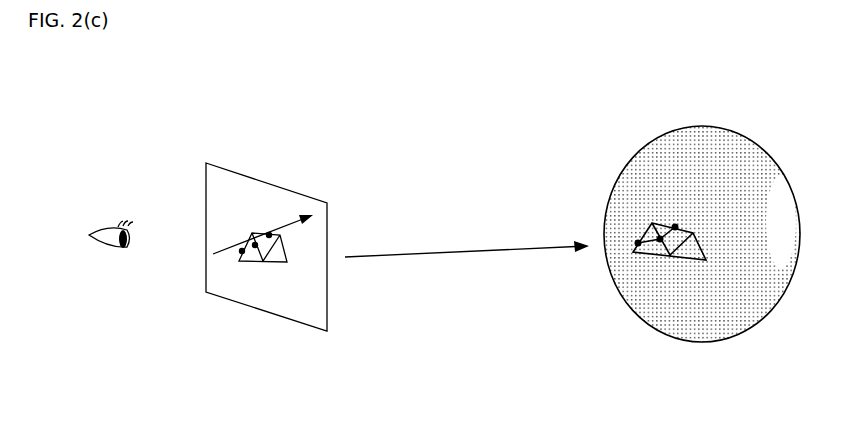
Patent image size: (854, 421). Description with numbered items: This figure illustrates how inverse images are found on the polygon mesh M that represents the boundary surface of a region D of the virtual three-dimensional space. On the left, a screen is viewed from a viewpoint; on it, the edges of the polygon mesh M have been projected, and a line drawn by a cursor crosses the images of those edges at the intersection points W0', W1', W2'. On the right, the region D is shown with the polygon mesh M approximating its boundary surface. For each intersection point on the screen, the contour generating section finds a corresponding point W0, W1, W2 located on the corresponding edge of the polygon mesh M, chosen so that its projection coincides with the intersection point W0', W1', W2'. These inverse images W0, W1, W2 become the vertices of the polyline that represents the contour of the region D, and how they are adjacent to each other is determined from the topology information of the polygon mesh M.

The region D is at (705, 220).
The polygon mesh M is at (690, 262).
The intersection point W0 is at (629, 234).
The intersection point W1 is at (662, 259).
The intersection point W2 is at (677, 217).
The intersection point W0' is at (232, 240).
The intersection point W1' is at (261, 261).
The intersection point W2' is at (266, 221).